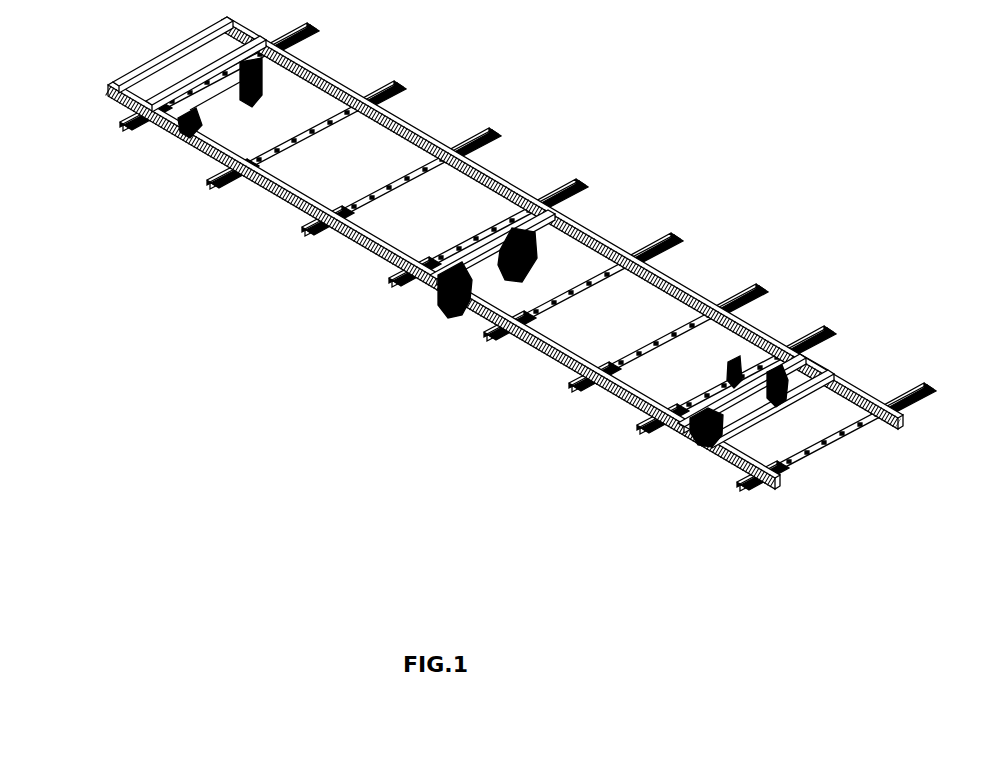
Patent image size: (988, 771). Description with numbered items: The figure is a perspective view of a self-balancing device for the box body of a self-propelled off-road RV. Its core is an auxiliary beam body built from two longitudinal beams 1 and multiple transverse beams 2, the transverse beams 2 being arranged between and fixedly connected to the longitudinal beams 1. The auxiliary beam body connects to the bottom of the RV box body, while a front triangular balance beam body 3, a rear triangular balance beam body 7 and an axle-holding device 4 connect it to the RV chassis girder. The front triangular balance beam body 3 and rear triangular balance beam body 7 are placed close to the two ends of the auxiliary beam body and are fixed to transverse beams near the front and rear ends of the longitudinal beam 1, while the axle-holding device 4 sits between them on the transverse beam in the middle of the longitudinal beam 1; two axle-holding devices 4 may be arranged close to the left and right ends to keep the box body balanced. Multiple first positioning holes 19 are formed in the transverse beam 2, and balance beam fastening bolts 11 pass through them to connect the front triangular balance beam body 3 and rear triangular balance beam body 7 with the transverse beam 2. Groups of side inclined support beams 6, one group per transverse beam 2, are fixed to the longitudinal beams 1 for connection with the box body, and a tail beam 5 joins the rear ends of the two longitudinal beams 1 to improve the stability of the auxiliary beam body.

The longitudinal beam 1 is at (857, 397).
The transverse beam 2 is at (627, 390).
The front triangular balance beam body 3 is at (717, 443).
The axle-holding device 4 is at (440, 302).
The tail beam 5 is at (113, 87).
The side inclined support beam 6 is at (317, 247).
The rear triangular balance beam body 7 is at (190, 130).
The balance beam fastening bolt 11 is at (735, 367).
The first positioning hole 19 is at (760, 363).